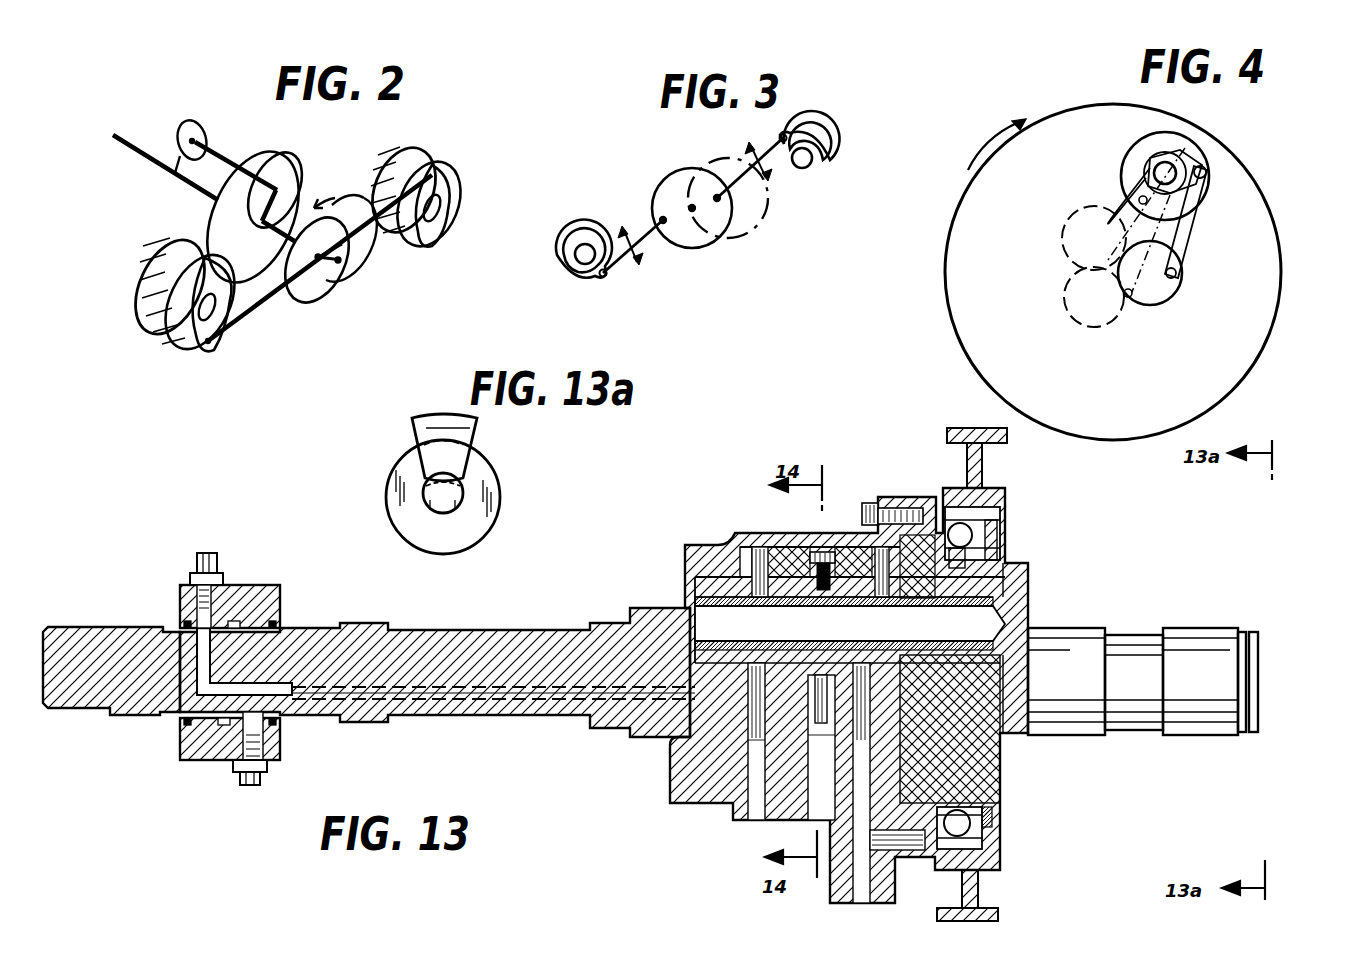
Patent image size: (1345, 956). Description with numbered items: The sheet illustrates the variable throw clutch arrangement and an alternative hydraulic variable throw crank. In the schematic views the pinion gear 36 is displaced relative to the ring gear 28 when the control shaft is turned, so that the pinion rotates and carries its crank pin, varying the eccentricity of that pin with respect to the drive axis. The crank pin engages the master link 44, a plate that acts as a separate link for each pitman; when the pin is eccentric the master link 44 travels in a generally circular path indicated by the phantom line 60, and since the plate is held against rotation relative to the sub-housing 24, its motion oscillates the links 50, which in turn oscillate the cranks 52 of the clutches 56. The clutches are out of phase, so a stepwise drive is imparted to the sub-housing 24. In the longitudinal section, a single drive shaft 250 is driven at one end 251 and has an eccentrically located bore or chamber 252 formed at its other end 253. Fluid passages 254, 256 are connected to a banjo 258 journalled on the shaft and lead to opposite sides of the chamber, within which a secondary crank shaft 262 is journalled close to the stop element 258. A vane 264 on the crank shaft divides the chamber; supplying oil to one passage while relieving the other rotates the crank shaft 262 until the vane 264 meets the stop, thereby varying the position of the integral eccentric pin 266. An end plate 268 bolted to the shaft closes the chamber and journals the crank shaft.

In FIG. 4, the sub-housing 24 is at (946, 284).
In FIG. 2, the ring gear 28 is at (215, 218).
In FIG. 2, the pinion gear 36 is at (286, 168).
In FIG. 2, the master link 44 is at (302, 302).
In FIG. 2, the clutches 56 is at (425, 163).
In FIG. 4, the clutches 56 is at (1178, 160).
In FIG. 4, the pitman arms or links 50 is at (1188, 241).
In FIG. 4, the cranks 52 is at (1200, 168).
In FIG. 4, the phantom line 60 is at (1130, 300).
In FIG. 13, the drive shaft 250 is at (474, 601).
In FIG. 13, the end 251 is at (112, 602).
In FIG. 13, the bore or chamber 252 is at (720, 573).
In FIG. 13, the end 253 is at (682, 790).
In FIG. 13, the fluid passage 254 is at (502, 686).
In FIG. 13, the fluid passage 256 is at (500, 700).
In FIG. 13, the banjo / shaft stop element 258 is at (252, 585).
In FIG. 13a, the secondary crank shaft 262 is at (498, 519).
In FIG. 13, the secondary crank shaft 262 is at (910, 590).
In FIG. 13, the vane 264 is at (800, 552).
In FIG. 13a, the eccentric pin 266 is at (462, 492).
In FIG. 13, the eccentric pin 266 is at (1105, 607).
In FIG. 13, the end plate 268 is at (990, 786).